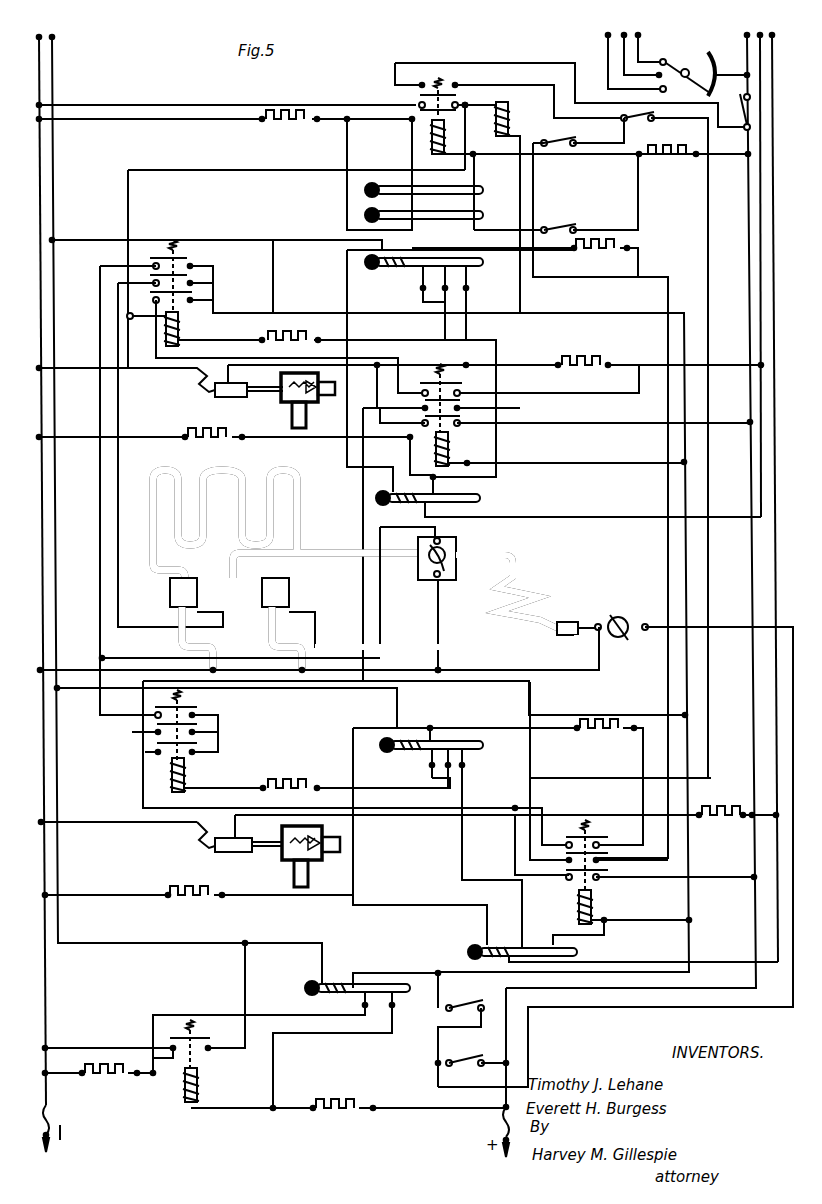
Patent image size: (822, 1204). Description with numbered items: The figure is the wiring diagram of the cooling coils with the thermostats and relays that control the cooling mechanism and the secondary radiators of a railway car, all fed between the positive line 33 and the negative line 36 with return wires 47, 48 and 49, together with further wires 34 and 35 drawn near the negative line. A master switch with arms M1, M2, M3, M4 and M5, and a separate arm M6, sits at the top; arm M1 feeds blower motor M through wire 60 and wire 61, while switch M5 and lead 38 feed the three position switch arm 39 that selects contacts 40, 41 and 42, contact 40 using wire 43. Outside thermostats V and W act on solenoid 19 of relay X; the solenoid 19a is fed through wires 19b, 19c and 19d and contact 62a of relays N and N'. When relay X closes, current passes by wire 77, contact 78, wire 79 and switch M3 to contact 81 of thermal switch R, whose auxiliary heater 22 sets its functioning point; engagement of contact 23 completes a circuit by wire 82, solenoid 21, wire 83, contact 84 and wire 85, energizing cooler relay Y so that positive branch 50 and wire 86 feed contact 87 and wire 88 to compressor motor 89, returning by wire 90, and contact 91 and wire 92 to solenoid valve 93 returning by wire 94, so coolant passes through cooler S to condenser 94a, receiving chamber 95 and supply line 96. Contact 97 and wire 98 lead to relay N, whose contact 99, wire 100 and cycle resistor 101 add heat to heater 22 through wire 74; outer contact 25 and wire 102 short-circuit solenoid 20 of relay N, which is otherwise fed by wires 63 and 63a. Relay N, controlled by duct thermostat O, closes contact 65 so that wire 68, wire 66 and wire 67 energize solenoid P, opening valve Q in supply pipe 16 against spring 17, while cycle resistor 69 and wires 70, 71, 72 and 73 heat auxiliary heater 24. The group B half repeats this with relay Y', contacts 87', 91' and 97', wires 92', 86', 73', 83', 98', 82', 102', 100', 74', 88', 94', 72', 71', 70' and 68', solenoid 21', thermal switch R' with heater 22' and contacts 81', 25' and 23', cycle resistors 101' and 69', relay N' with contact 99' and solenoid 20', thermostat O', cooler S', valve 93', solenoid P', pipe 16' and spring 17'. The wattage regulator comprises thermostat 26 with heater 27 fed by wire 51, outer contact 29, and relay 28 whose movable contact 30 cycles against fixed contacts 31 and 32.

The negative line 36 is at (46, 52).
The wire 47 is at (68, 943).
The wire 85 is at (203, 105).
The contact of relay X 84 is at (410, 102).
The contact of relay X 78 is at (477, 96).
The wire 77 is at (546, 66).
The wire 79 is at (582, 88).
The solenoid 19a is at (512, 110).
The solenoid of relay X 19 is at (430, 138).
The wire 19d is at (509, 193).
The wire 19b is at (540, 186).
The wire 19c is at (530, 700).
The wire 43 is at (632, 48).
The contact 41 is at (654, 46).
The three position switch arm 39 is at (709, 52).
The contact 40 is at (685, 65).
The contact 42 is at (674, 93).
The positive line 33 is at (743, 50).
The lead 38 is at (732, 67).
The wire 71' is at (765, 262).
The wire 71 is at (779, 497).
The switch arm M5 is at (739, 112).
The switch arm M6 is at (560, 140).
The blower switch arm M3 is at (636, 124).
The switch arm M4 is at (550, 227).
The blower switch arm M2 is at (462, 990).
The switch arm M1 is at (472, 1064).
The electric motor M is at (615, 840).
The outside thermostat V is at (424, 174).
The outside thermostat W is at (435, 217).
The cycle resistor 101' is at (525, 258).
The wire 74' is at (215, 230).
The cooler relay Y' is at (168, 276).
The contact of relay Y' 87' is at (208, 248).
The contact of relay Y' 91' is at (219, 269).
The wire 92' is at (157, 490).
The contact of relay Y' 97' is at (219, 295).
The wire 86' is at (280, 276).
The wire 73' is at (326, 293).
The wire 83' is at (274, 346).
The actuating solenoid 21' is at (213, 329).
The wire 98' is at (339, 346).
The thermal switch R' is at (460, 371).
The auxiliary heater 22' is at (374, 282).
The contact of thermal switch 81' is at (411, 286).
The outer contact 25' is at (479, 303).
The contact 23' is at (473, 379).
The wire 82' is at (518, 642).
The wire 102' is at (542, 330).
The wire 100' is at (682, 352).
The cycle resistor 69' is at (414, 371).
The wire 70' is at (556, 389).
The wire 68' is at (469, 349).
The contact of relay N' 99' is at (441, 523).
The contact of relay N' 62a is at (565, 413).
The relay N' is at (463, 431).
The solenoid of relay N' 20' is at (547, 453).
The wire 66 is at (375, 362).
The valve solenoid P' is at (126, 392).
The supply pipe 16' is at (249, 399).
The spring 17' is at (308, 404).
The duct thermostat O' is at (268, 467).
The wire 72' is at (593, 505).
The cooler S' is at (285, 514).
The cooler S is at (304, 517).
The wire 88' is at (80, 495).
The auxiliary heater 24 is at (380, 526).
The solenoid valve 93' is at (198, 586).
The solenoid valve 93 is at (294, 584).
The wire 94' is at (180, 639).
The wire 94 is at (301, 640).
The wire 88 is at (236, 636).
The compressor motor 89 is at (424, 570).
The wire 90 is at (438, 586).
The condenser 94a is at (539, 597).
The receiving chamber 95 is at (572, 622).
The supply line 96 is at (464, 642).
The wire 60 is at (658, 633).
The wire 61 is at (77, 674).
The wire 74 is at (225, 706).
The cooler relay Y is at (172, 724).
The contact of relay Y 87 is at (213, 696).
The wire 92 is at (118, 720).
The contact of relay Y 91 is at (127, 735).
The wire 83 is at (298, 235).
The contact of relay Y 97 is at (208, 744).
The actuating solenoid 21 is at (218, 775).
The wire 86 is at (268, 740).
The wire 82 is at (359, 776).
The thermal switch R is at (441, 836).
The auxiliary heater 22 is at (375, 770).
The contact of thermal switch 81 is at (415, 763).
The contact 23 is at (423, 767).
The outer contact 25 is at (490, 848).
The cycle resistor 101 is at (535, 782).
The wire 100 is at (620, 771).
The wire 50 is at (711, 744).
The wire 98 is at (491, 802).
The cycle resistor 69 is at (505, 802).
The wire 70 is at (767, 799).
The wire 68 is at (654, 835).
The wire 102 is at (440, 840).
The contact of relay N 99 is at (600, 854).
The relay contact 65 is at (560, 880).
The relay N is at (605, 898).
The solenoid of relay N 20 is at (622, 917).
The wire 63 is at (648, 922).
The wire 63a is at (404, 897).
The duct thermostat O is at (522, 954).
The wire 72 is at (643, 956).
The wire 73 is at (368, 867).
The wire 67 is at (98, 827).
The solenoid P is at (206, 847).
The spring 17 is at (249, 848).
The supply pipe 16 is at (331, 835).
The valve Q is at (312, 866).
The wire 48 is at (237, 984).
The wattage thermostat 26 is at (306, 984).
The heater coil 27 is at (339, 972).
The wire 51 is at (398, 970).
The outer contact 29 is at (394, 984).
The wire 49 is at (102, 1048).
The movable contact 30 is at (202, 1036).
The fixed contact 31 is at (164, 1057).
The fixed contact 32 is at (208, 1052).
The wattage relay 28 is at (198, 1093).
The resistor 35 is at (148, 1081).
The resistor 34 is at (384, 1105).
The outside relay X is at (430, 51).